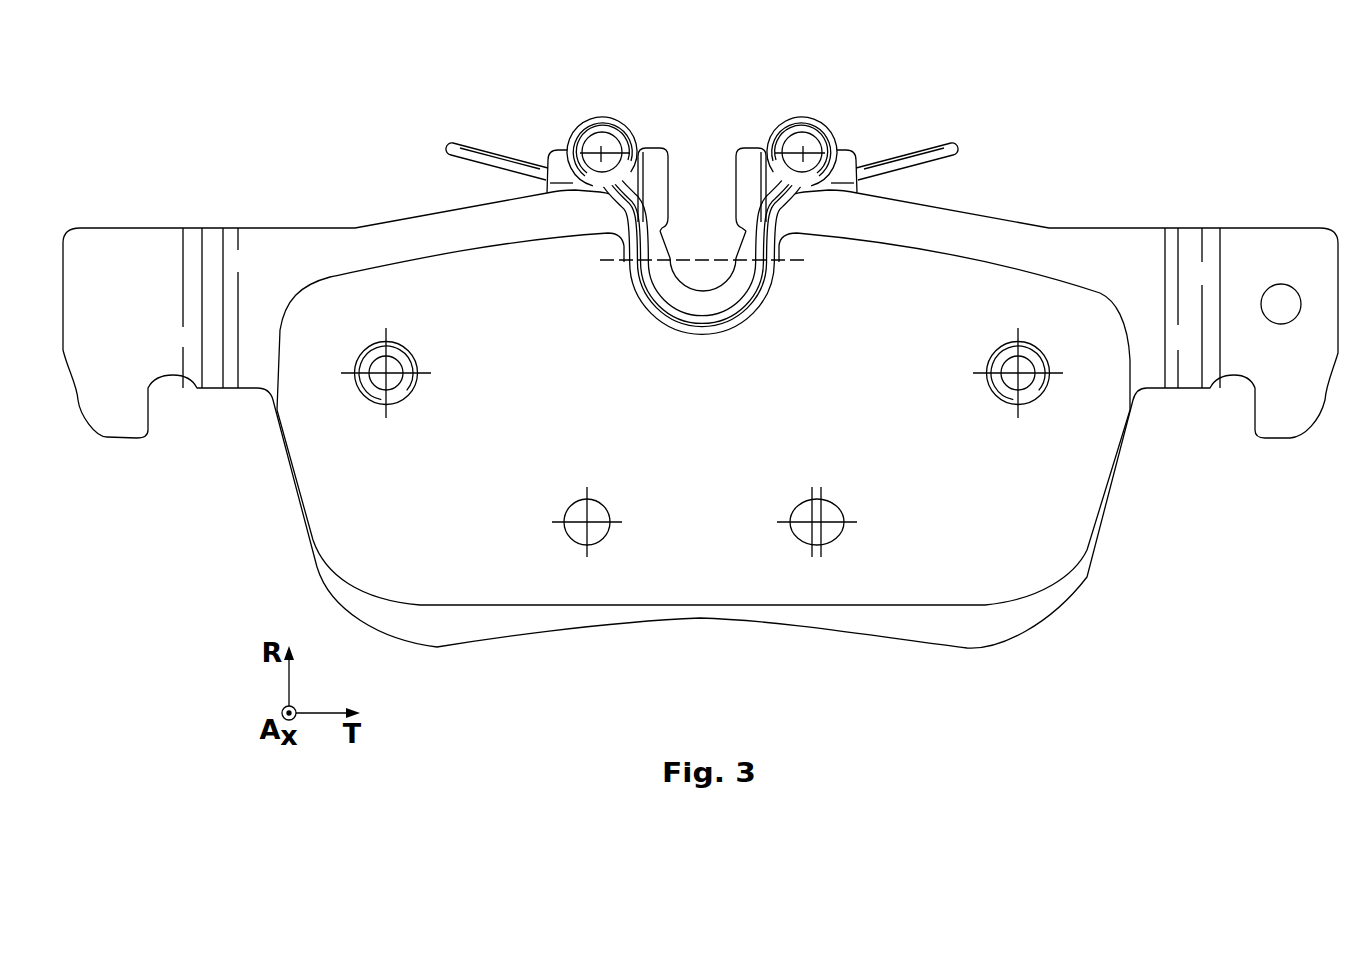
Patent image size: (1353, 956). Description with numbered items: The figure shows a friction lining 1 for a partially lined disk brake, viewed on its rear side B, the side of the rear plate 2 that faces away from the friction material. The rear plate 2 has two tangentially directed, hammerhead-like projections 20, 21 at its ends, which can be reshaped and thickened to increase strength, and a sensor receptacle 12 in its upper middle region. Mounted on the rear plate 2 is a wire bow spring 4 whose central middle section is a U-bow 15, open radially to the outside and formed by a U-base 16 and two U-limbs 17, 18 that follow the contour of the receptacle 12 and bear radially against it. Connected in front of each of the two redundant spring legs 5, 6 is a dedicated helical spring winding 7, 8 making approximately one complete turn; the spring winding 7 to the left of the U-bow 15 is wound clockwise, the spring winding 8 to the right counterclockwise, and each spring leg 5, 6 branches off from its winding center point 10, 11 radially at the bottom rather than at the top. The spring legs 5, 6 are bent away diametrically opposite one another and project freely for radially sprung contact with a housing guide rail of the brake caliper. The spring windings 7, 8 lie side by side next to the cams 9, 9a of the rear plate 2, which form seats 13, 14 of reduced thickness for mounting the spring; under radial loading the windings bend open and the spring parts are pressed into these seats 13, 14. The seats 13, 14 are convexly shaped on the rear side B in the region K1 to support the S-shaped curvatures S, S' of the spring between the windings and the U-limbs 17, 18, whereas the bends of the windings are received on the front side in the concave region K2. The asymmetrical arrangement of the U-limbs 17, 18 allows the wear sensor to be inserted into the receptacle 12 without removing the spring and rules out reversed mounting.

The friction lining 1 is at (262, 526).
The rear plate 2 is at (291, 245).
The wire bow spring 4 is at (625, 231).
The spring leg 5 is at (462, 144).
The spring leg 6 is at (947, 147).
The spring winding 7 is at (601, 119).
The spring winding 8 is at (824, 136).
The cam 9 is at (850, 155).
The cam 9a is at (556, 152).
The winding center point 10 is at (607, 142).
The winding center point 11 is at (792, 142).
The receptacle 12 is at (670, 238).
The seat 13 is at (620, 164).
The seat 14 is at (848, 167).
The U-bow 15 is at (648, 315).
The U-base 16 is at (700, 323).
The U-limb 17 is at (640, 270).
The U-limb 18 is at (760, 270).
The projection 20 is at (213, 368).
The projection 21 is at (1191, 370).
The region K1 is at (557, 196).
The region K2 is at (640, 300).
The curvature S is at (587, 240).
The curvature S' is at (821, 238).
The rear side B is at (1281, 304).